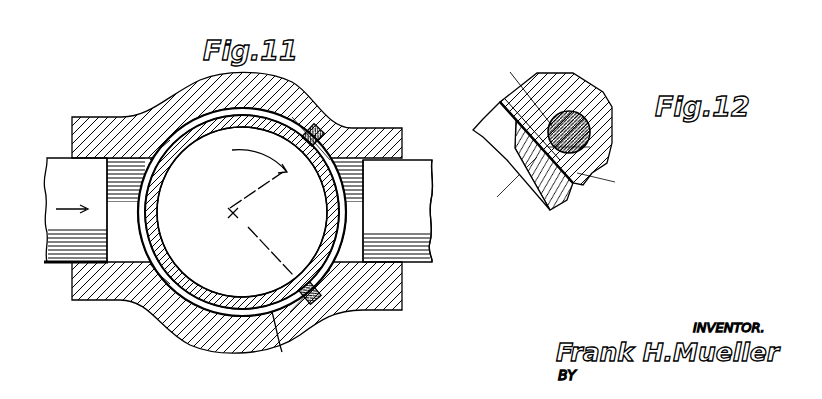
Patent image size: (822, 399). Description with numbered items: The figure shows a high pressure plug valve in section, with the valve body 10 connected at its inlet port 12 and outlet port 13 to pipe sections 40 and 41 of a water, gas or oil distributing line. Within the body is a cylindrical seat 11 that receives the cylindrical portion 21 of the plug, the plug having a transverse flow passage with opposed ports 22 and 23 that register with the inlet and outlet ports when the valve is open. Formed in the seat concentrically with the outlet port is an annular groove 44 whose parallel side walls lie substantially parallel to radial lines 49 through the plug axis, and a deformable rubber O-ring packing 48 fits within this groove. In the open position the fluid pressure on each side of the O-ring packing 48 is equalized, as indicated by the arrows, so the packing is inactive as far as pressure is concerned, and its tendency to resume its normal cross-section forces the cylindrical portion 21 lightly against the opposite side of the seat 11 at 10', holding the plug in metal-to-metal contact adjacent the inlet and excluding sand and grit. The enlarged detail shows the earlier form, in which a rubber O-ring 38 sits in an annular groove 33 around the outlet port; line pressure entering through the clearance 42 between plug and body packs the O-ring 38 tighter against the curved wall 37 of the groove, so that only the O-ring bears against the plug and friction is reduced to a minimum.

In FIG. 11, the valve body 10 is at (237, 209).
In FIG. 11, the metal-to-metal contact point 10' is at (178, 212).
In FIG. 11, the cylindrical seat 11 is at (276, 333).
In FIG. 11, the inlet port 12 is at (107, 186).
In FIG. 11, the outlet port 13 is at (358, 204).
In FIG. 11, the cylindrical portion of plug 21 is at (247, 276).
In FIG. 12, the cylindrical portion of plug 21 is at (550, 203).
In FIG. 11, the plug port 22 is at (153, 244).
In FIG. 11, the plug port 23 is at (321, 228).
In FIG. 12, the annular groove 33 is at (586, 88).
In FIG. 12, the curved wall 37 is at (590, 148).
In FIG. 12, the rubber O-ring 38 is at (587, 110).
In FIG. 11, the pipe section 40 is at (64, 265).
In FIG. 11, the pipe section 41 is at (443, 143).
In FIG. 12, the space or clearance 42 is at (500, 102).
In FIG. 11, the annular groove 44 is at (312, 129).
In FIG. 11, the O-ring packing 48 is at (329, 161).
In FIG. 11, the radial lines 49 is at (247, 225).